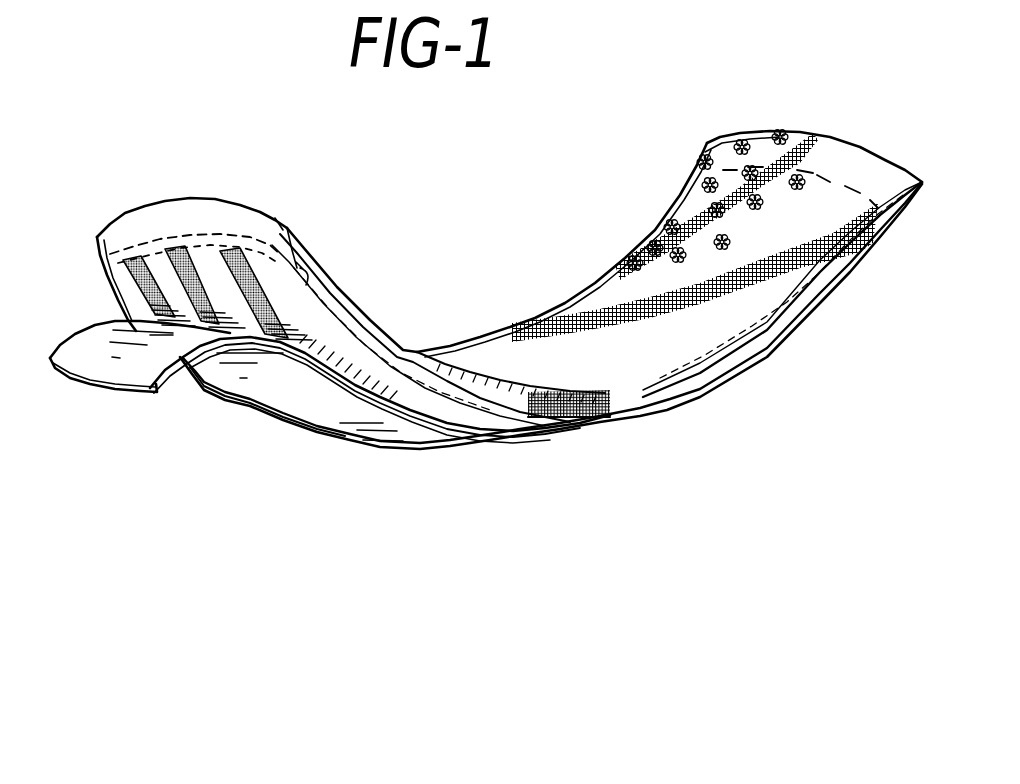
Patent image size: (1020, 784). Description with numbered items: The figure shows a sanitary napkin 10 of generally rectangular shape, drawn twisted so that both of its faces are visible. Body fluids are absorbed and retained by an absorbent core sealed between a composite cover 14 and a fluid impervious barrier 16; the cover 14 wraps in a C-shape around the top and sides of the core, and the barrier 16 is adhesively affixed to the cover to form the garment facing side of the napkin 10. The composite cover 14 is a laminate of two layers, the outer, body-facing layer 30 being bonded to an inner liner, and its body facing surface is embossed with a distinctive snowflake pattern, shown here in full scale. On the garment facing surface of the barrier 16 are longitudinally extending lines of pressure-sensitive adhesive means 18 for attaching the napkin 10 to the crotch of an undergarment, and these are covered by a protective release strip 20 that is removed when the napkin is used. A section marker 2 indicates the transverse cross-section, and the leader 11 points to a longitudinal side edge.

The sanitary napkin 10 is at (509, 290).
The longitudinal side edge 11 is at (350, 311).
The composite cover 14 is at (552, 319).
The fluid impervious barrier 16 is at (396, 390).
The pressure-sensitive adhesive means 18 is at (253, 255).
The release strip 20 is at (142, 378).
The outer body-facing layer 30 is at (600, 389).
The section line 2- 2 is at (584, 225).